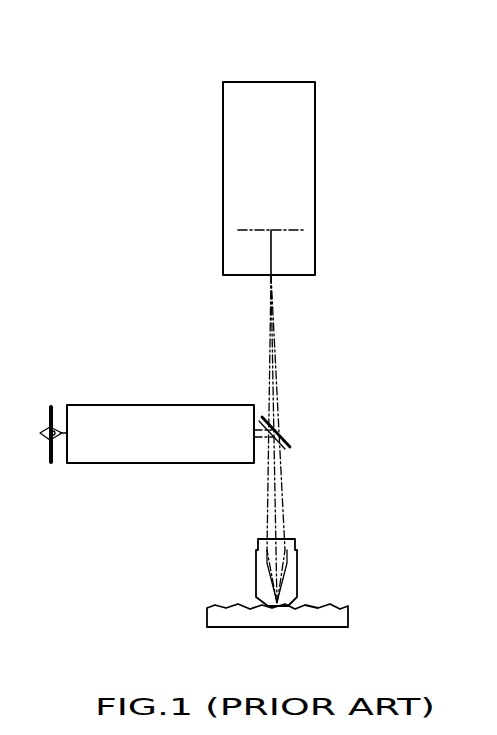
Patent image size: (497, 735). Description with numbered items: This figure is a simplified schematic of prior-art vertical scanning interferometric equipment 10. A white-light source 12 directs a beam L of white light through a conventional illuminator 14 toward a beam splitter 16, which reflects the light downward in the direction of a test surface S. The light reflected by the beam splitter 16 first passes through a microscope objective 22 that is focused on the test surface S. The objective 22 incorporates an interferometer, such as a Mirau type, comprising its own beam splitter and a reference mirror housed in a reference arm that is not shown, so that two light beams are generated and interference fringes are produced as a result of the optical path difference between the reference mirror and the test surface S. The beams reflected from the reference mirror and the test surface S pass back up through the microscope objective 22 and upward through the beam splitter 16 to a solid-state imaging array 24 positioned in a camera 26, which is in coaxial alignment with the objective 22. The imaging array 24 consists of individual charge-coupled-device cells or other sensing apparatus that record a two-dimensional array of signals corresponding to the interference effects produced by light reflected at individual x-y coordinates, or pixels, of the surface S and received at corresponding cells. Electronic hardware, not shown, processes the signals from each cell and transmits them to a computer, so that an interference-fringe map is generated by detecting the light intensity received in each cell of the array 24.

The vertical scanning interferometric equipment 10 is at (371, 76).
The white-light source 12 is at (52, 405).
The illuminator 14 is at (158, 405).
The beam splitter 16 is at (293, 443).
The microscope objective 22 is at (297, 572).
The solid-state imaging array 24 is at (240, 230).
The camera 26 is at (315, 175).
The test surface S is at (343, 607).
The beam of white light L is at (56, 448).